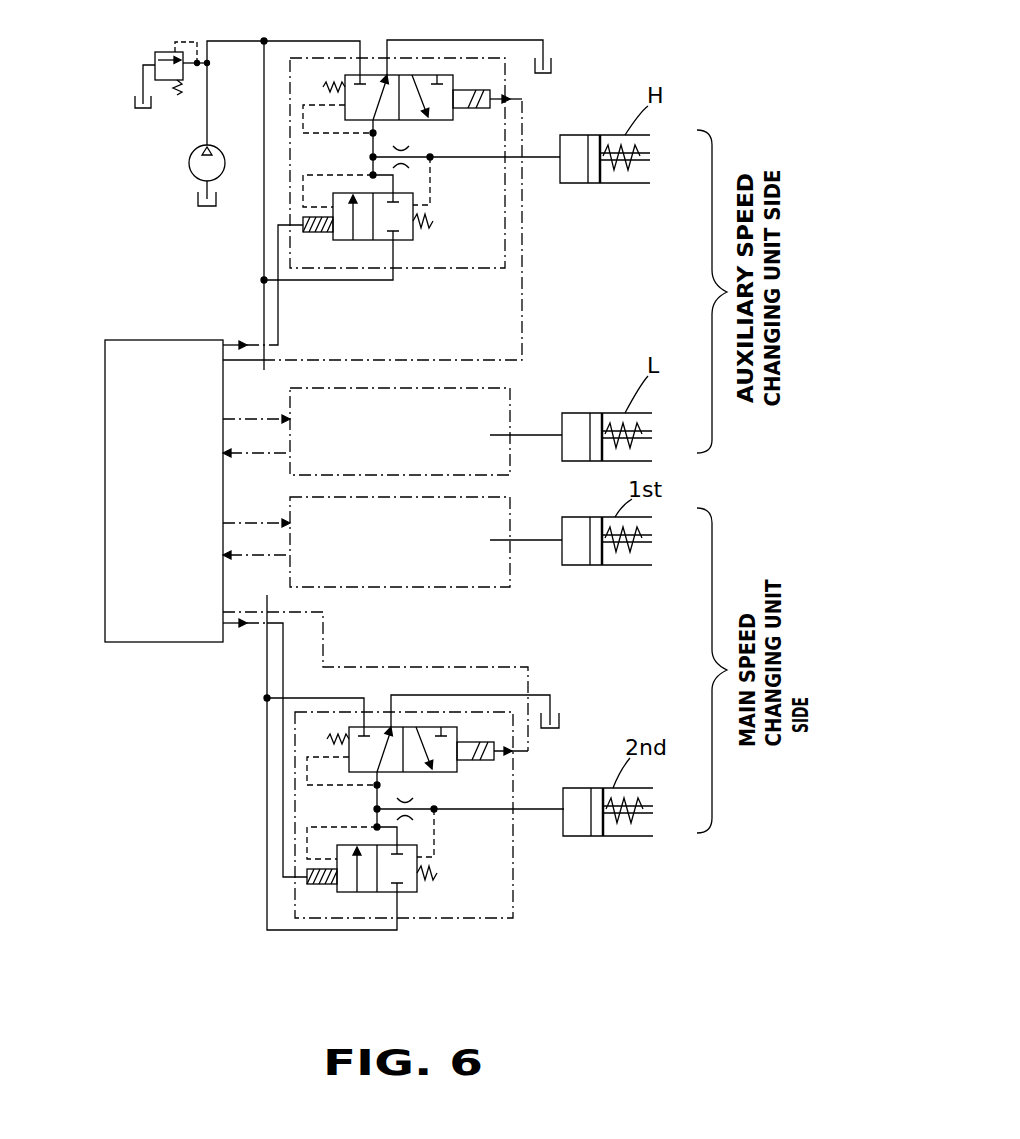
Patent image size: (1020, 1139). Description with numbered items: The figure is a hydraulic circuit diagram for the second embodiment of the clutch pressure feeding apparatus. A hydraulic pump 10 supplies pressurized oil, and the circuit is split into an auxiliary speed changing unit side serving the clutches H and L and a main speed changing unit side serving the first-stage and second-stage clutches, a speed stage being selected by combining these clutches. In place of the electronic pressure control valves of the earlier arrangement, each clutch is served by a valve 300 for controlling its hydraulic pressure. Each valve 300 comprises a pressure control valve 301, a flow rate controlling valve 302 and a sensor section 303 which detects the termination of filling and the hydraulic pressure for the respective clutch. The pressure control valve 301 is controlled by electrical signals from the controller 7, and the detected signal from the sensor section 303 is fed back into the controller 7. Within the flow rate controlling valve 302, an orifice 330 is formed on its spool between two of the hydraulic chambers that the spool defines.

The controller 7 is at (105, 425).
The hydraulic pump 10 is at (190, 166).
The valve 300 is at (505, 88).
The pressure control valve 301 is at (455, 120).
The flow rate controlling valve 302 is at (415, 240).
The sensor section 303 is at (307, 233).
The orifice 330 is at (398, 151).